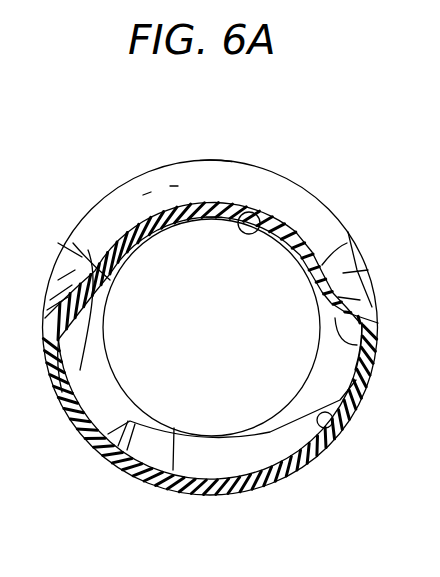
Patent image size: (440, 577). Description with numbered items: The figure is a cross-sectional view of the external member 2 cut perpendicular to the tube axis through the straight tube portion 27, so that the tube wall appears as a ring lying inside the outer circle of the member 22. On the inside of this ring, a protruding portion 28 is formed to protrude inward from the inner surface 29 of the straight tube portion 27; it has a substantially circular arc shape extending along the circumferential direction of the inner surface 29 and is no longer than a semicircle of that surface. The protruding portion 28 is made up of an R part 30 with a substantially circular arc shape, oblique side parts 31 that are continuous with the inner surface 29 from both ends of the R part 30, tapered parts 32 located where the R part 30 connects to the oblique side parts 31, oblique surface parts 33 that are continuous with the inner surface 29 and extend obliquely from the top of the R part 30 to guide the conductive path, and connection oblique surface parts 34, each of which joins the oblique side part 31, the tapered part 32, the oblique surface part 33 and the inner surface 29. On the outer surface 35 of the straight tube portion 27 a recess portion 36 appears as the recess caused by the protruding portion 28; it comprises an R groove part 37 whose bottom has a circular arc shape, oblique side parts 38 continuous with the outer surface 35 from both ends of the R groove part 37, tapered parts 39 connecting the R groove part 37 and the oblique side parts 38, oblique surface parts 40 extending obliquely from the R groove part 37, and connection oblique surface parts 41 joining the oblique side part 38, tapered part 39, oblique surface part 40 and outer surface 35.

The pipe assembly 2 is at (435, 173).
The outer pipe 22 is at (280, 483).
The straight tube portion 27 is at (303, 467).
The protruding portion 28 is at (258, 225).
The inner surface 29 is at (353, 420).
The R part 30 is at (213, 218).
The oblique side part 31 is at (62, 393).
The tapered part 32 is at (104, 305).
The oblique surface part 33 is at (173, 188).
The connection oblique surface part 34 is at (62, 258).
The outer surface 35 is at (327, 450).
The recess portion 36 is at (217, 158).
The R groove part 37 is at (245, 205).
The oblique side part 38 is at (52, 270).
The tapered part 39 is at (62, 300).
The oblique surface part 40 is at (147, 193).
The connection oblique surface part 41 is at (54, 290).